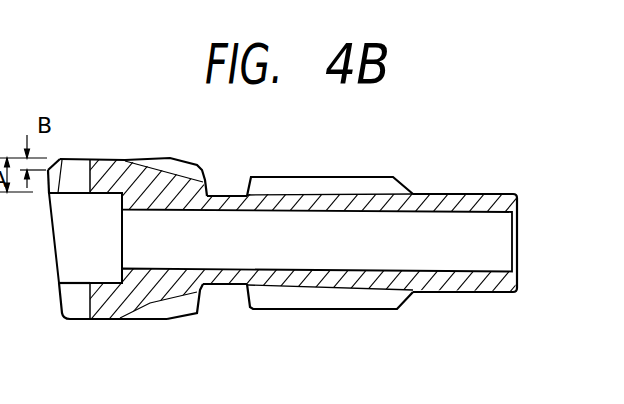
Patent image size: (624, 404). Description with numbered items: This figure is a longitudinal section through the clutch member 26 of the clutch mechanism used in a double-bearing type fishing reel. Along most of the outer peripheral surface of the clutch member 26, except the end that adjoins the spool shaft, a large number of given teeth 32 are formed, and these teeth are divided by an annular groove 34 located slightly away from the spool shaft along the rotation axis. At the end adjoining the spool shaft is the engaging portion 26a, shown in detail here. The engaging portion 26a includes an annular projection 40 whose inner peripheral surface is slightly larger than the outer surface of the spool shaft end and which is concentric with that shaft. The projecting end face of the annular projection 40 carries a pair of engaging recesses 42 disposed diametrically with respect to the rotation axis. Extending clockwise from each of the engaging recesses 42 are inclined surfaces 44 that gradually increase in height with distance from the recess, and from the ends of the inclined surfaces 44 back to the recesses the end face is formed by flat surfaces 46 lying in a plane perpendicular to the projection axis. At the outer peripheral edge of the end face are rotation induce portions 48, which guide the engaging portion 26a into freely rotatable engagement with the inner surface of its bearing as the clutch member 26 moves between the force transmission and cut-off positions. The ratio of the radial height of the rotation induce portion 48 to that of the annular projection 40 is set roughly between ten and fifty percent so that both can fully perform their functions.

The clutch member 26 is at (462, 284).
The engaging portion 26a is at (178, 299).
The given teeth 32 is at (358, 177).
The annular groove 34 is at (223, 195).
The annular projection 40 is at (107, 292).
The engaging recesses 42 is at (83, 160).
The inclined surfaces 44 is at (60, 298).
The flat surfaces 46 is at (47, 183).
The rotation induce portions 48 is at (56, 159).